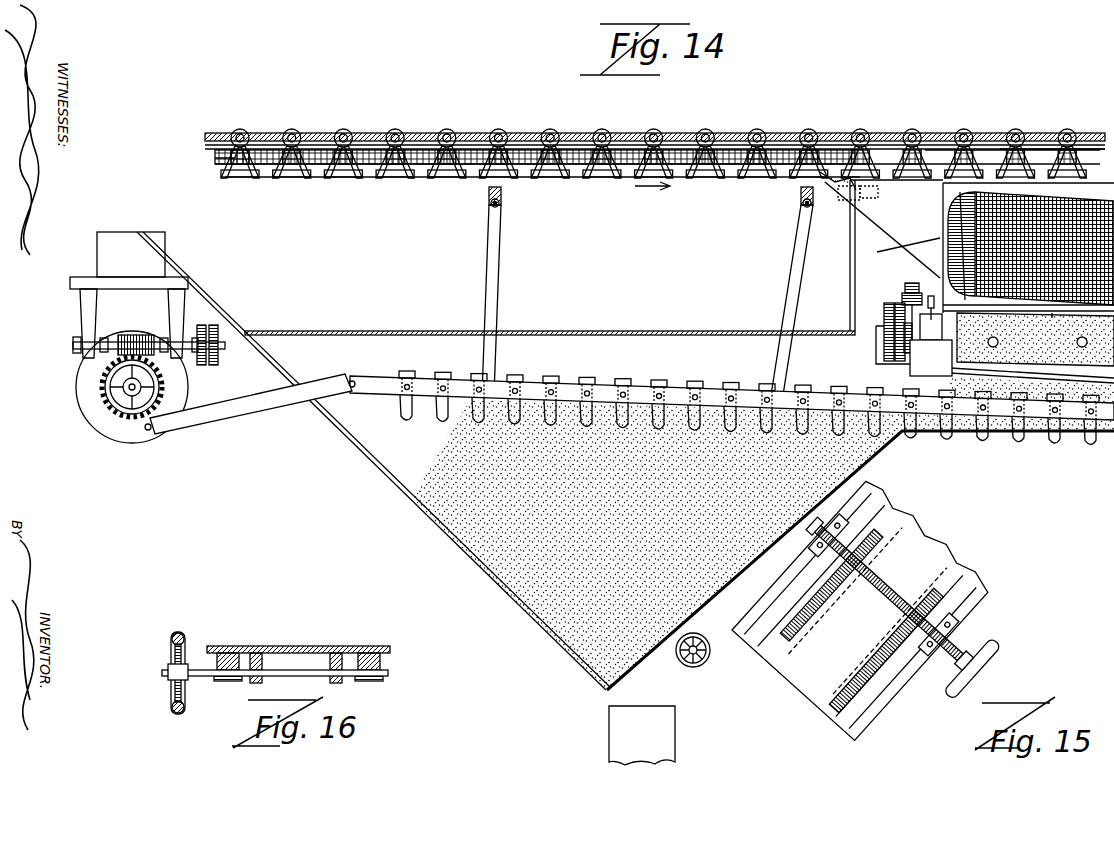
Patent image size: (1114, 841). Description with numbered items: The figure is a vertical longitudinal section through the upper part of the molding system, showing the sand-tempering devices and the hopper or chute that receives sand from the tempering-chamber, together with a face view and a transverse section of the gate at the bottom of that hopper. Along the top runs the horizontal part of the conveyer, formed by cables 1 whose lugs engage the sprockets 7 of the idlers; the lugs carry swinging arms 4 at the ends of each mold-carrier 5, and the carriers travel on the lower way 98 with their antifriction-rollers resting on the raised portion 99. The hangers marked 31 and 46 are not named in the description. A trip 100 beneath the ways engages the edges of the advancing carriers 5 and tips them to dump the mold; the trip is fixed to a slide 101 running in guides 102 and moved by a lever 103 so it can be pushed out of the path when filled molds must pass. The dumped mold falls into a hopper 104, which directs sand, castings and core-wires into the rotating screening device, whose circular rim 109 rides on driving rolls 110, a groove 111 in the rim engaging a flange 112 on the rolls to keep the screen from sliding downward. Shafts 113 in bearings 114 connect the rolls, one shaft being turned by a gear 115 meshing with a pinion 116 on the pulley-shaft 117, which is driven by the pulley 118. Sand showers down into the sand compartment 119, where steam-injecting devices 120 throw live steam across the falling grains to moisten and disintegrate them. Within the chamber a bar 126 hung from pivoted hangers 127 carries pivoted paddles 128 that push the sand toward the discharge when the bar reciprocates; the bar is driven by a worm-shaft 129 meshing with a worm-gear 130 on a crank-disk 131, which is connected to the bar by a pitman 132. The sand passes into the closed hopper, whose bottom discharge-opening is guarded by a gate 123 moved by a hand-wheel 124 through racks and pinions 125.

In FIG. 14, the cable 1 is at (232, 131).
In FIG. 14, the sprockets 7 is at (1050, 131).
In FIG. 14, the swinging arm 4 is at (1038, 150).
In FIG. 14, the mold-carrier 5 is at (710, 177).
In FIG. 14, the carrier hanger 31 is at (970, 148).
In FIG. 14, the carrier hanger 46 is at (766, 150).
In FIG. 14, the lower way 98 is at (430, 165).
In FIG. 14, the raised portion 99 is at (392, 165).
In FIG. 14, the trip 100 is at (830, 190).
In FIG. 14, the slide 101 is at (862, 196).
In FIG. 14, the guides 102 is at (878, 196).
In FIG. 14, the lever 103 is at (852, 226).
In FIG. 14, the hopper 104 is at (882, 228).
In FIG. 14, the circular rim 109 is at (908, 256).
In FIG. 14, the driving rolls 110 is at (943, 311).
In FIG. 14, the groove 111 is at (943, 222).
In FIG. 14, the flange 112 is at (942, 327).
In FIG. 14, the shafts 113 is at (1052, 318).
In FIG. 14, the bearings 114 is at (930, 296).
In FIG. 14, the gear 115 is at (905, 288).
In FIG. 14, the pinion 116 is at (920, 338).
In FIG. 14, the pulley-shaft 117 is at (874, 328).
In FIG. 14, the pulley 118 is at (884, 352).
In FIG. 14, the sand compartment 119 is at (1105, 425).
In FIG. 14, the steam-injecting devices 120 is at (1056, 350).
In FIG. 15, the gate 123 is at (792, 696).
In FIG. 16, the gate 123 is at (280, 651).
In FIG. 15, the hand-wheel 124 is at (998, 652).
In FIG. 16, the hand-wheel 124 is at (186, 633).
In FIG. 15, the racks and pinions 125 is at (905, 600).
In FIG. 16, the racks and pinions 125 is at (330, 657).
In FIG. 14, the bar 126 is at (605, 390).
In FIG. 14, the pivoted hangers 127 is at (500, 241).
In FIG. 14, the pivoted paddles 128 is at (512, 420).
In FIG. 14, the worm-shaft 129 is at (132, 335).
In FIG. 14, the worm-gear 130 is at (112, 420).
In FIG. 14, the crank-disk 131 is at (130, 432).
In FIG. 14, the pitman 132 is at (228, 410).